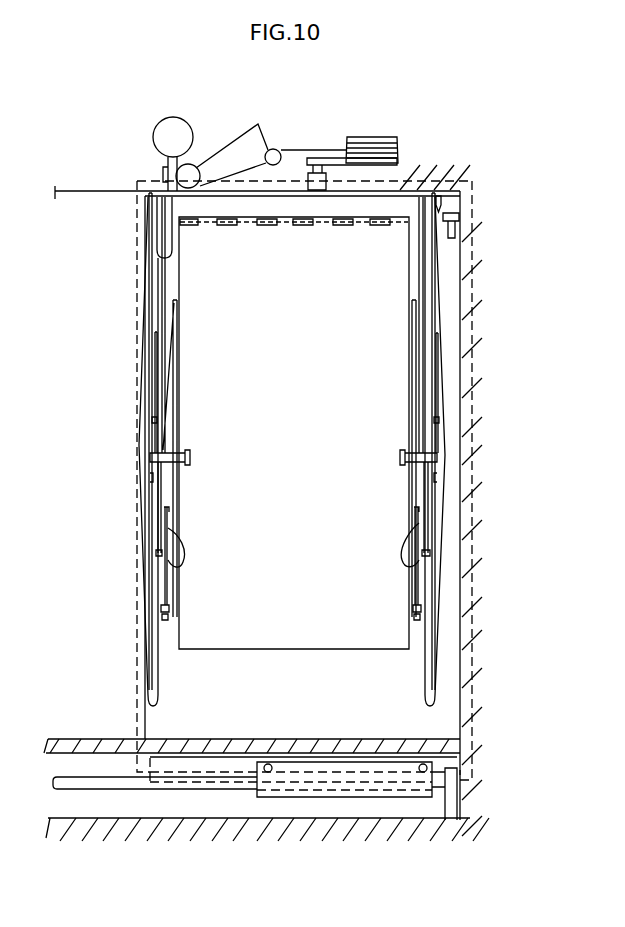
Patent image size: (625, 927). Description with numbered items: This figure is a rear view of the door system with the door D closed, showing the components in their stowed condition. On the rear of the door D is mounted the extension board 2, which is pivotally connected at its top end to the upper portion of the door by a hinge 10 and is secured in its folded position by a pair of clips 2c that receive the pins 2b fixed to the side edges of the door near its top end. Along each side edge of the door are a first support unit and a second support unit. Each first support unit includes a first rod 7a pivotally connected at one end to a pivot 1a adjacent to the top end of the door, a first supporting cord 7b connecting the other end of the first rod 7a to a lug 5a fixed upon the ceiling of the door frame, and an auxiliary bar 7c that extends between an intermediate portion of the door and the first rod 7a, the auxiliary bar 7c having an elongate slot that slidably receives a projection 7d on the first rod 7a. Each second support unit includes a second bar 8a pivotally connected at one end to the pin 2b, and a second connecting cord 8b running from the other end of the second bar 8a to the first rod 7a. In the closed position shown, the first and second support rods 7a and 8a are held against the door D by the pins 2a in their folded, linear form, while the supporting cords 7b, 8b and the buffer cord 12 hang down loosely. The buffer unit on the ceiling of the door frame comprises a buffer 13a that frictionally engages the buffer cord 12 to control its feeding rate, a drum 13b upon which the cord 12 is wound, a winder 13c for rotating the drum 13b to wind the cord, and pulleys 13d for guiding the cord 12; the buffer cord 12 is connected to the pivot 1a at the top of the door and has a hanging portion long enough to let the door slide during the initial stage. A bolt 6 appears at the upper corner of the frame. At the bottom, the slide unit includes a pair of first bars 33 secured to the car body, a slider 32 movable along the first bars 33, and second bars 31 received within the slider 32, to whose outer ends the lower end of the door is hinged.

The pivot 1a is at (434, 193).
The extension board 2 is at (290, 350).
The pins 2a is at (405, 467).
The pin 2b is at (162, 616).
The clips 2c is at (162, 622).
The lug 5a is at (437, 199).
The bolt 6 is at (458, 228).
The first rod 7a is at (155, 322).
The first supporting cord 7b is at (150, 462).
The auxiliary bar 7c is at (154, 373).
The projection 7d is at (153, 422).
The second bar 8a is at (166, 588).
The second connecting cord 8b is at (158, 528).
The hinge 10 is at (288, 230).
The buffer cord 12 is at (150, 197).
The buffer 13a is at (183, 124).
The drum 13b is at (371, 138).
The winder 13c is at (306, 175).
The pulleys 13d is at (259, 123).
The second bars 31 is at (422, 773).
The slider 32 is at (348, 797).
The first bars 33 is at (86, 790).
The door D is at (476, 210).